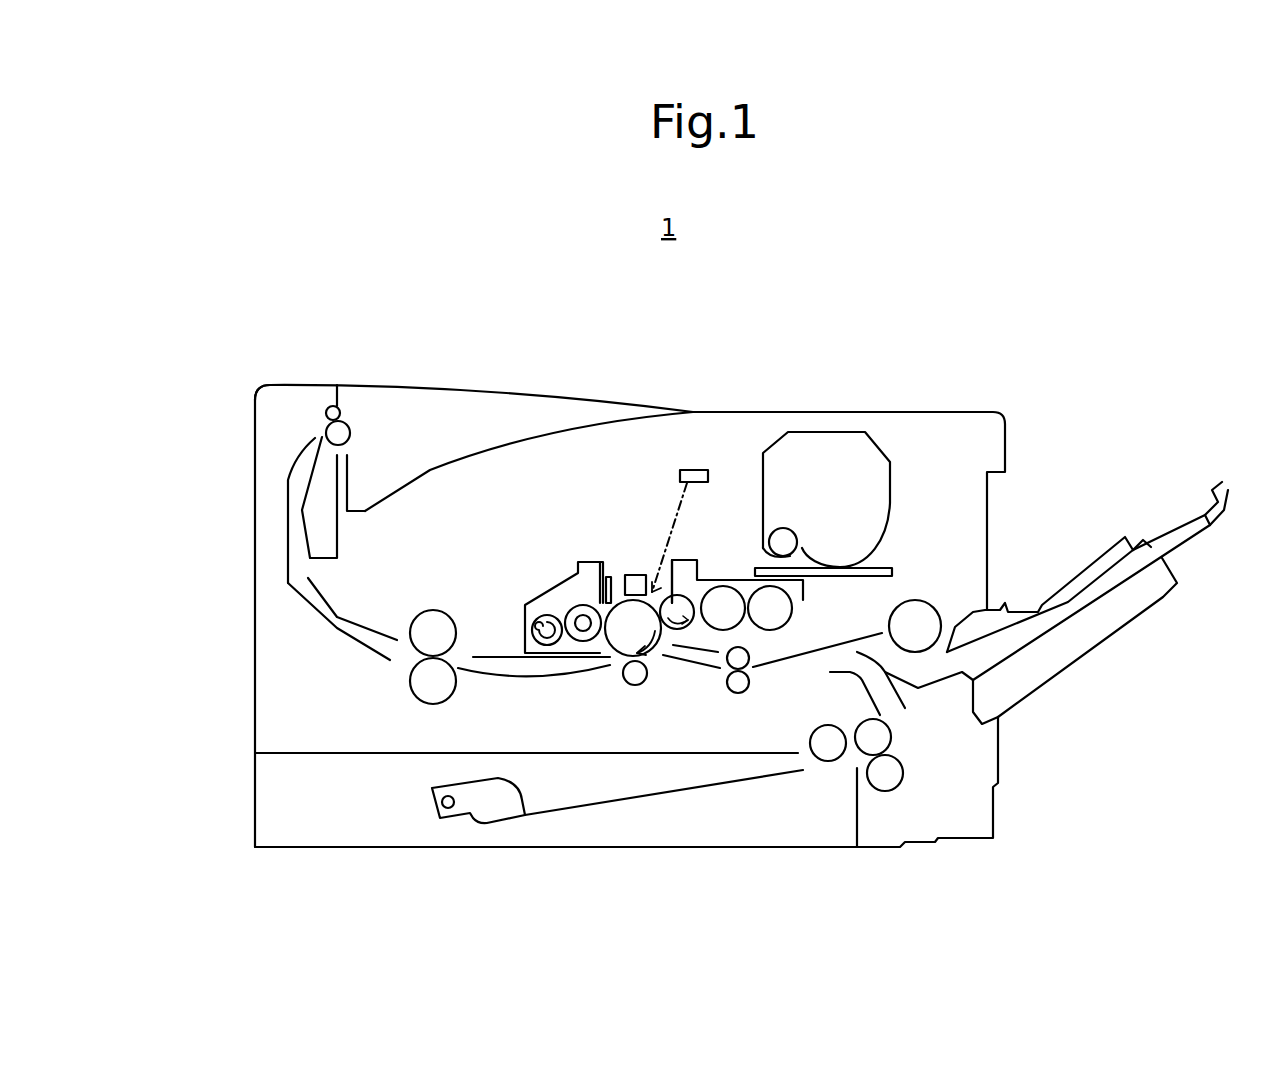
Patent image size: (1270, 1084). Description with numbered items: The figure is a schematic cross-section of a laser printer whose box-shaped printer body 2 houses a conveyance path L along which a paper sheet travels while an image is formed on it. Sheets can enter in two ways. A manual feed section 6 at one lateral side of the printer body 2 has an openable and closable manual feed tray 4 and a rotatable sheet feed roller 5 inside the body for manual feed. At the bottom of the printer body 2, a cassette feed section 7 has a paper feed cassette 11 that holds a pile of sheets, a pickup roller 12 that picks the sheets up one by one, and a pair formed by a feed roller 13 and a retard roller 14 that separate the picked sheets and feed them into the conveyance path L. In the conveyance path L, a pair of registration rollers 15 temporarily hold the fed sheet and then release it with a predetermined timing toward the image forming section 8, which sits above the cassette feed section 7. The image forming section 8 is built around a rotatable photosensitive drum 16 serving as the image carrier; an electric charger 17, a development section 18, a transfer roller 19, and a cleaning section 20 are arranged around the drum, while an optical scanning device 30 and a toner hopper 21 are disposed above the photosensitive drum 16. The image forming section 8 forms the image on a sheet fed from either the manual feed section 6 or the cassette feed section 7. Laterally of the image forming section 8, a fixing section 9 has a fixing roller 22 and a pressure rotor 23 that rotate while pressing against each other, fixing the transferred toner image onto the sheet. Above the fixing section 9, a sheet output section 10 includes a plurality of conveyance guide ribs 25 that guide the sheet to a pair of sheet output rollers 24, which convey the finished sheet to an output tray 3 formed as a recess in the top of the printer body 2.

The printer body 2 is at (253, 627).
The output tray 3 is at (433, 470).
The manual feed tray 4 is at (1172, 540).
The sheet feed roller 5 is at (926, 598).
The manual feed section 6 is at (1090, 488).
The cassette feed section 7 is at (927, 748).
The image forming section 8 is at (733, 537).
The fixing section 9 is at (394, 678).
The sheet output section 10 is at (298, 410).
The paper feed cassette 11 is at (717, 787).
The pickup roller 12 is at (828, 761).
The feed roller 13 is at (887, 735).
The retard roller 14 is at (893, 781).
The registration rollers 15 is at (748, 687).
The photosensitive drum 16 is at (660, 655).
The electric charger 17 is at (631, 573).
The development section 18 is at (796, 612).
The transfer roller 19 is at (643, 682).
The cleaning section 20 is at (540, 602).
The toner hopper 21 is at (830, 452).
The fixing roller 22 is at (433, 611).
The pressure rotor 23 is at (421, 697).
The sheet output rollers 24 is at (350, 425).
The conveyance guide ribs 25 is at (332, 545).
The optical scanning device 30 is at (690, 469).
The conveyance path L is at (522, 677).